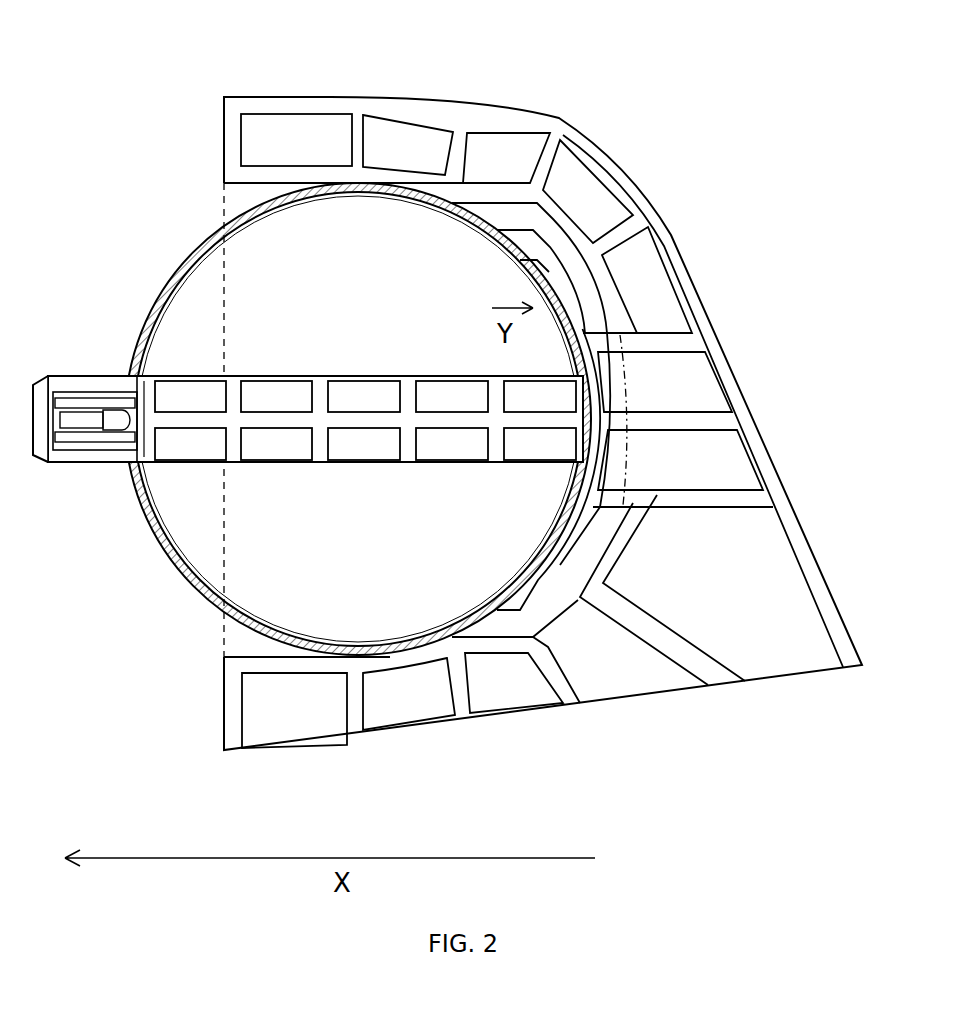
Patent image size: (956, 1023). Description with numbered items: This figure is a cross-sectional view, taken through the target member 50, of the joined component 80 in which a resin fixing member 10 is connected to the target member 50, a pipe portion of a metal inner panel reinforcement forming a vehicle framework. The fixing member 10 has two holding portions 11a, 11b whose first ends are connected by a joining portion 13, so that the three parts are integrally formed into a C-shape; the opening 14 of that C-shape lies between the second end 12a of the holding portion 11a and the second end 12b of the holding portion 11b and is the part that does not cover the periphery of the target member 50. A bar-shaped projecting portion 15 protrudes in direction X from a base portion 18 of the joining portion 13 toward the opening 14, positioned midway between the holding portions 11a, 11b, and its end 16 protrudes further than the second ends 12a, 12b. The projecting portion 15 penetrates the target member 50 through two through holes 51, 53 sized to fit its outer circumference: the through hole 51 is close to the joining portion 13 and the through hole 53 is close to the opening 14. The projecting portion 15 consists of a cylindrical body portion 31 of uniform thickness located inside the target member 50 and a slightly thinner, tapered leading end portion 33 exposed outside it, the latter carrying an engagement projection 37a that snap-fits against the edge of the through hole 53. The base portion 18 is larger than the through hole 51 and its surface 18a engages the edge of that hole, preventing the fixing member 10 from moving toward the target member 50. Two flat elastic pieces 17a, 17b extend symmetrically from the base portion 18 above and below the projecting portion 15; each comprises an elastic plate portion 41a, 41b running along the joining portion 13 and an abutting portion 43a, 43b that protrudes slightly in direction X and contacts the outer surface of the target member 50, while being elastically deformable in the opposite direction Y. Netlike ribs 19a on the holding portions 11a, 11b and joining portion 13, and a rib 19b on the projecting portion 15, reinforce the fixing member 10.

The fixing member 10 is at (847, 624).
The holding portion 11a is at (295, 130).
The holding portion 11b is at (297, 710).
The second end 12a is at (224, 133).
The second end 12b is at (224, 715).
The joining portion 13 is at (730, 440).
The opening 14 is at (224, 198).
The projecting portion 15 is at (175, 378).
The end 16 is at (33, 425).
The elastic piece 17a is at (585, 290).
The elastic piece 17b is at (583, 545).
The base portion 18 is at (615, 418).
The surface 18a is at (554, 270).
The rib 19a is at (685, 345).
The rib 19b is at (330, 468).
The body portion 31 is at (375, 467).
The leading end portion 33 is at (110, 465).
The engagement projection 37a is at (80, 428).
The elastic plate portion 41a is at (557, 270).
The elastic plate portion 41b is at (560, 563).
The abutting portion 43a is at (517, 240).
The abutting portion 43b is at (525, 590).
The target member 50 is at (176, 268).
The through hole 51 is at (603, 455).
The through hole 53 is at (110, 385).
The joined component 80 is at (752, 82).